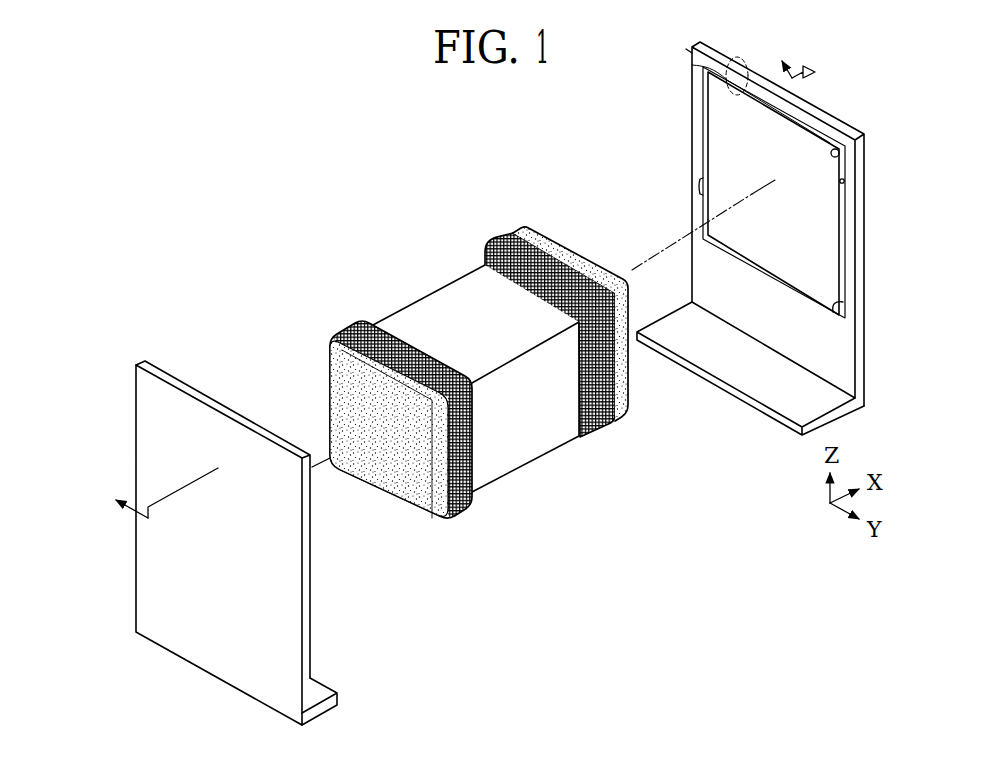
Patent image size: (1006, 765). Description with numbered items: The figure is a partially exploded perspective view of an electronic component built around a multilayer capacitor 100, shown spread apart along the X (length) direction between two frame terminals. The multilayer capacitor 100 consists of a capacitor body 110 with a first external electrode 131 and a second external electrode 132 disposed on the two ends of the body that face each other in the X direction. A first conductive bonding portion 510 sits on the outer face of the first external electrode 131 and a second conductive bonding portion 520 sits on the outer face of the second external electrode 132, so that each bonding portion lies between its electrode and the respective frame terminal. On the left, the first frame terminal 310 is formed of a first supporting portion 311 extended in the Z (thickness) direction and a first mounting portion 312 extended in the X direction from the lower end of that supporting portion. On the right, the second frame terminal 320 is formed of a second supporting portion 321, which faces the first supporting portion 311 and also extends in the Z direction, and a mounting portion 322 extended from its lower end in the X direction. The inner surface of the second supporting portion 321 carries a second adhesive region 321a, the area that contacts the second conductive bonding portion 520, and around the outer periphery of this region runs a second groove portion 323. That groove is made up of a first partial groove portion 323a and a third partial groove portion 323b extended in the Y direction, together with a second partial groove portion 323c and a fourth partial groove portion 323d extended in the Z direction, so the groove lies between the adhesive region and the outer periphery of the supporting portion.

The multilayer capacitor 100 is at (522, 346).
The capacitor body 110 is at (413, 320).
The first external electrode 131 is at (362, 319).
The second external electrode 132 is at (501, 240).
The first conductive bonding portion 510 is at (330, 338).
The second conductive bonding portion 520 is at (532, 238).
The first frame terminal 310 is at (276, 543).
The first supporting portion 311 is at (272, 678).
The first mounting portion 312 is at (329, 692).
The second frame terminal 320 is at (799, 235).
The second supporting portion 321 is at (799, 224).
The second adhesive region 321a is at (732, 108).
The mounting portion 322 is at (822, 400).
The second groove portion 323 is at (835, 233).
The first partial groove portion 323a is at (876, 311).
The third partial groove portion 323b is at (839, 156).
The second partial groove portion 323c is at (844, 183).
The fourth partial groove portion 323d is at (704, 177).